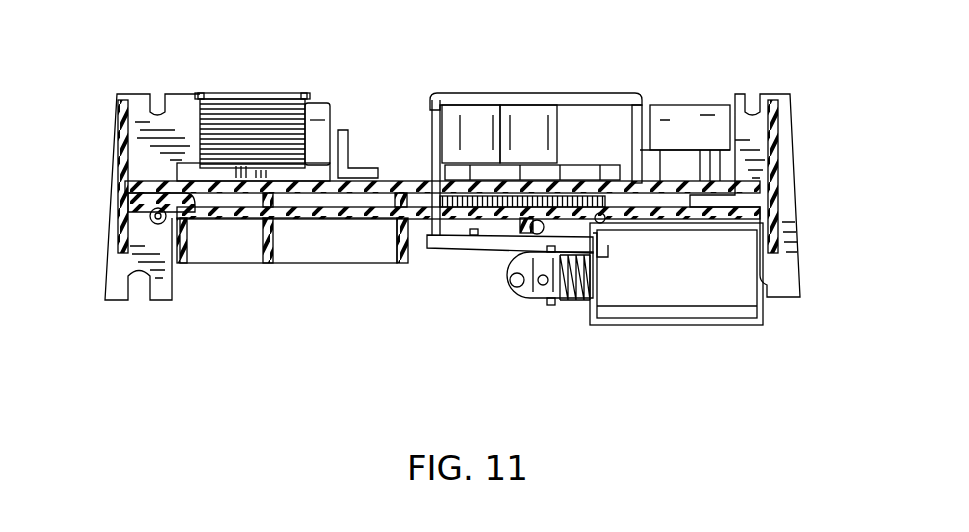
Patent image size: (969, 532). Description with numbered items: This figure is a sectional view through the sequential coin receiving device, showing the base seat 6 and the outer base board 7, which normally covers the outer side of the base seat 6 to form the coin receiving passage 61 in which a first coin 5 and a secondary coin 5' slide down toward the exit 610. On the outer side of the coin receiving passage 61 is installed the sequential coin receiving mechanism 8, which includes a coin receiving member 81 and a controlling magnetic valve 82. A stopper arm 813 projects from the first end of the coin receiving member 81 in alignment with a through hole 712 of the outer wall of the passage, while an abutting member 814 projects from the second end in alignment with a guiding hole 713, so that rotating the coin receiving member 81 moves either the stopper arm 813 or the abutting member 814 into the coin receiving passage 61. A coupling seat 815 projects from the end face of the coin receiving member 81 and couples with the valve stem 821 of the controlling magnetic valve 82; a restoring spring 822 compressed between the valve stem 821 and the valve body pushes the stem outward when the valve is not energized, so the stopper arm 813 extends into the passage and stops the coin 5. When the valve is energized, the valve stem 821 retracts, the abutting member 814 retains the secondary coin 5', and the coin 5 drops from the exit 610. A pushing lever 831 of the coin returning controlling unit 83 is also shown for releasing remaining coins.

The base seat 6 is at (115, 160).
The outer base board 7 is at (322, 255).
The coin returning controlling unit 83 is at (265, 125).
The pushing lever 831 is at (345, 103).
The through hole 712 is at (408, 203).
The stopper arm 813 is at (433, 178).
The coin 5 is at (536, 120).
The secondary coin 5' is at (552, 138).
The guiding hole 713 is at (603, 178).
The coin receiving passage 61 is at (673, 187).
The exit 610 is at (280, 232).
The sequential coin receiving mechanism 8 is at (668, 385).
The coin receiving member 81 is at (452, 245).
The coupling seat 815 is at (497, 282).
The valve stem 821 is at (513, 300).
The restoring spring 822 is at (570, 300).
The controlling magnetic valve 82 is at (630, 317).
The abutting member 814 is at (600, 220).